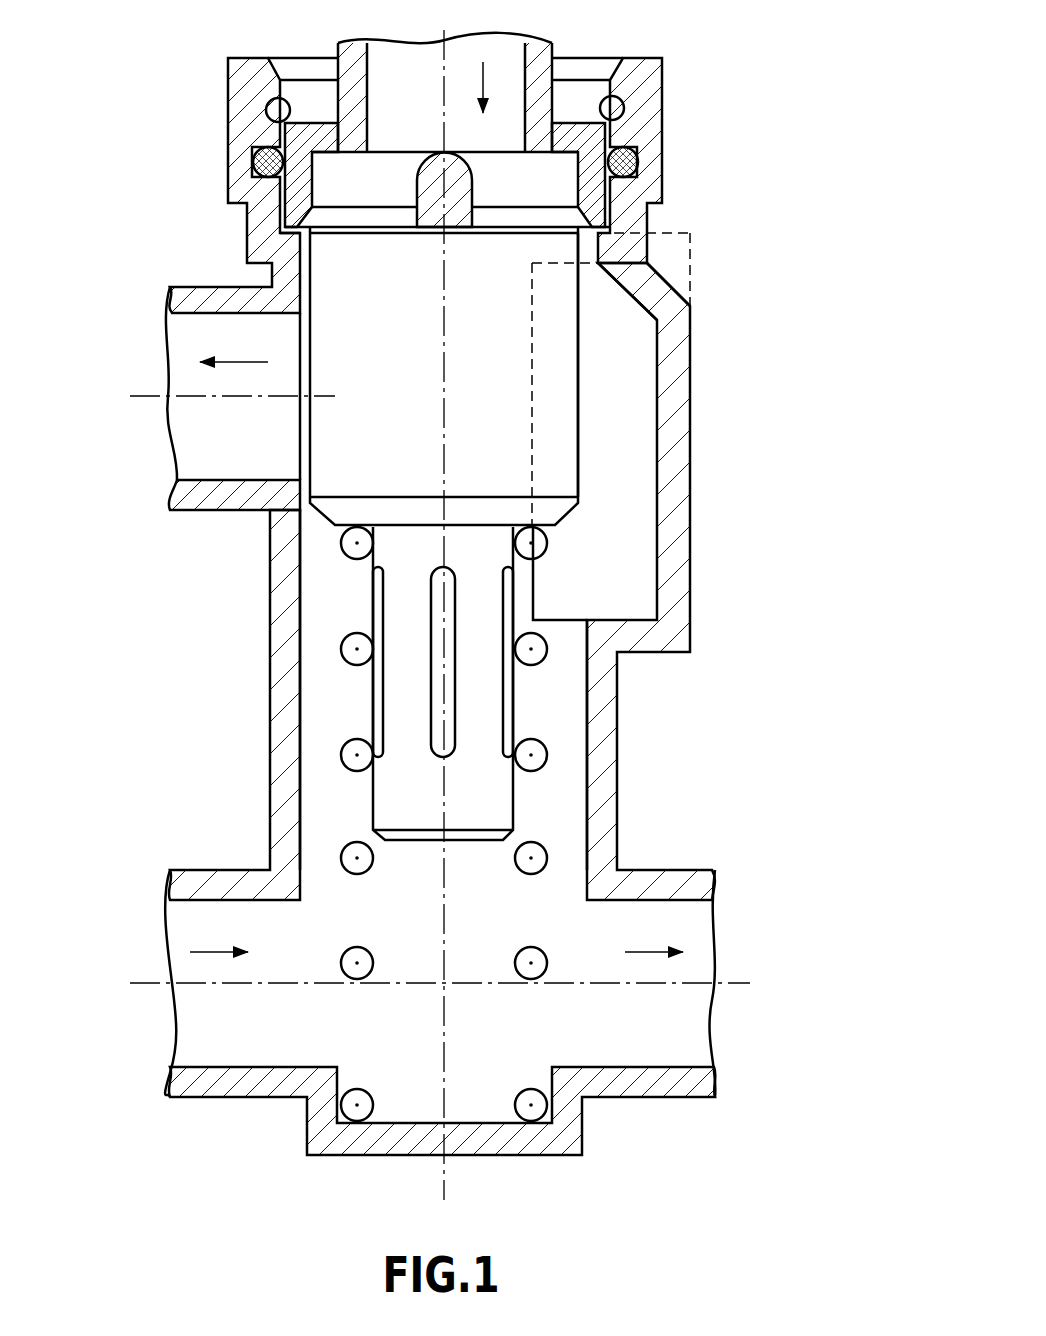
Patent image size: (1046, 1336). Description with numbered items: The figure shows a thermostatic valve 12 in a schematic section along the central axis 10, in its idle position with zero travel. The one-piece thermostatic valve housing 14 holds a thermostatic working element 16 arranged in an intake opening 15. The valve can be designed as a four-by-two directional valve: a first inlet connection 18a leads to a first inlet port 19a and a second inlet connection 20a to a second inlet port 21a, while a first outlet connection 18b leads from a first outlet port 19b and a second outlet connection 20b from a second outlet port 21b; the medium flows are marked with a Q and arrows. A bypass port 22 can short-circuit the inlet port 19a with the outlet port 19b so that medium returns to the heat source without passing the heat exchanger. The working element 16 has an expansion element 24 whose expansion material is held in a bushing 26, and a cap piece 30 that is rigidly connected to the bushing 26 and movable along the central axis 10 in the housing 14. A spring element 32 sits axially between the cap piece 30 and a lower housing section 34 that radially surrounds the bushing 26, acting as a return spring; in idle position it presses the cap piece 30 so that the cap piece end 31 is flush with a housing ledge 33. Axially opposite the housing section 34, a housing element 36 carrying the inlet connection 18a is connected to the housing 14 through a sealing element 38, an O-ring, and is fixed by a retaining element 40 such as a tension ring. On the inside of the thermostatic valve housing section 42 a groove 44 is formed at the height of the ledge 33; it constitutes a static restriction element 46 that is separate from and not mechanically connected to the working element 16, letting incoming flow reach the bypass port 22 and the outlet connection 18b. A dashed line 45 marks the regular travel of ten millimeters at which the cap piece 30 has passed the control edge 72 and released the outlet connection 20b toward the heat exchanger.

The central axis 10 is at (445, 287).
The thermostatic valve 12 is at (190, 81).
The thermostatic valve housing 14 is at (292, 752).
The intake opening 15 is at (557, 723).
The thermostatic working element 16 is at (590, 508).
The first inlet connection 18a is at (520, 25).
The first outlet connection 18b is at (697, 967).
The first inlet port 19a is at (391, 105).
The first outlet port 19b is at (641, 1035).
The second inlet connection 20a is at (160, 947).
The second outlet connection 20b is at (160, 437).
The second inlet port 21a is at (260, 1035).
The second outlet port 21b is at (249, 453).
The bypass port 22 is at (603, 453).
The expansion element 24 is at (557, 683).
The bushing 26 is at (417, 690).
The cap piece 30 is at (380, 483).
The cap piece end 31 is at (377, 237).
The spring element 32 is at (530, 753).
The housing ledge 33 is at (287, 237).
The lower housing section 34 is at (565, 1132).
The housing element 36 is at (297, 177).
The sealing element 38 is at (270, 163).
The retaining element 40 is at (612, 108).
The thermostatic valve housing section 42 is at (712, 210).
The groove 44 is at (587, 250).
The dashed line 45 is at (533, 395).
The restriction element 46 is at (445, 235).
The control edge 72 is at (291, 484).